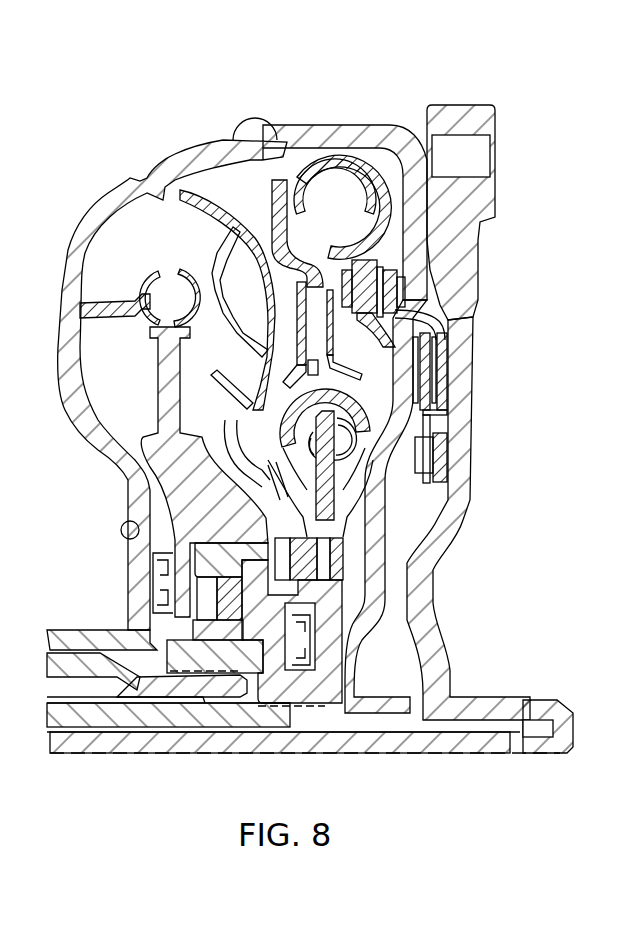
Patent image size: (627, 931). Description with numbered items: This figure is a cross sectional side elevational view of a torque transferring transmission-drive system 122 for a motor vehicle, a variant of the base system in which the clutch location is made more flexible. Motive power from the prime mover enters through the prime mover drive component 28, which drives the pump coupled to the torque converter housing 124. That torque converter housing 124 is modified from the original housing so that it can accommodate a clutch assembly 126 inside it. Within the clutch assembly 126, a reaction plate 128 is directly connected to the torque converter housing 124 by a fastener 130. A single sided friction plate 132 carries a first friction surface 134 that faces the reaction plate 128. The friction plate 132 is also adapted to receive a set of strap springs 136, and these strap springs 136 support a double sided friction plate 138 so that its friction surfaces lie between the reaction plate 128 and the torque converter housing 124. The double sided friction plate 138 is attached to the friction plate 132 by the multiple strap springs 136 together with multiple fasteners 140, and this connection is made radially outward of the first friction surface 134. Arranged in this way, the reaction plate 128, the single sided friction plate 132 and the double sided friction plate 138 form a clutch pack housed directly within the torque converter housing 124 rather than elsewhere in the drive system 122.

The prime mover drive component 28 is at (544, 707).
The transmission-drive system 122 is at (494, 86).
The torque converter housing 124 is at (420, 587).
The clutch assembly 126 is at (517, 364).
The reaction plate 128 is at (427, 412).
The fastener 130 is at (442, 458).
The single sided friction plate 132 is at (363, 613).
The first friction surface 134 is at (413, 358).
The strap springs 136 is at (420, 318).
The double sided friction plate 138 is at (425, 322).
The fasteners 140 is at (405, 283).